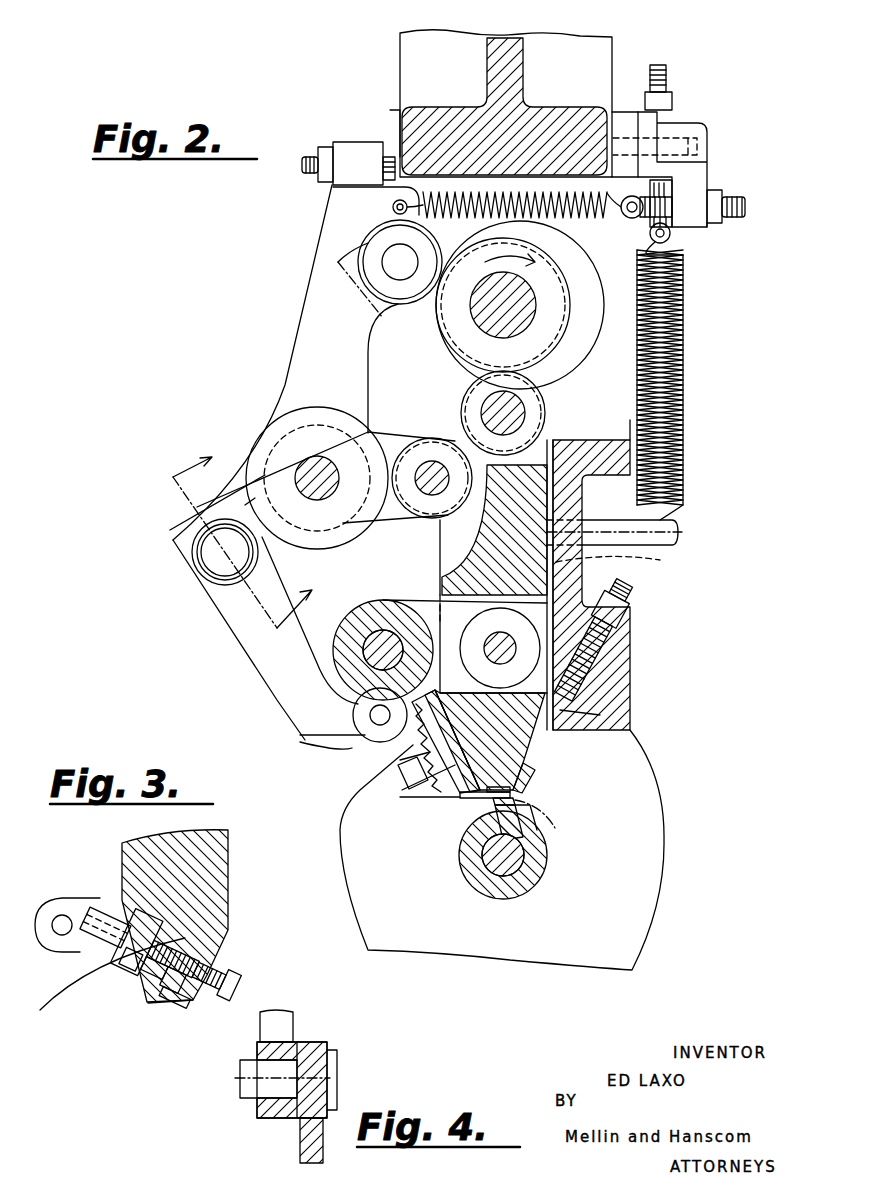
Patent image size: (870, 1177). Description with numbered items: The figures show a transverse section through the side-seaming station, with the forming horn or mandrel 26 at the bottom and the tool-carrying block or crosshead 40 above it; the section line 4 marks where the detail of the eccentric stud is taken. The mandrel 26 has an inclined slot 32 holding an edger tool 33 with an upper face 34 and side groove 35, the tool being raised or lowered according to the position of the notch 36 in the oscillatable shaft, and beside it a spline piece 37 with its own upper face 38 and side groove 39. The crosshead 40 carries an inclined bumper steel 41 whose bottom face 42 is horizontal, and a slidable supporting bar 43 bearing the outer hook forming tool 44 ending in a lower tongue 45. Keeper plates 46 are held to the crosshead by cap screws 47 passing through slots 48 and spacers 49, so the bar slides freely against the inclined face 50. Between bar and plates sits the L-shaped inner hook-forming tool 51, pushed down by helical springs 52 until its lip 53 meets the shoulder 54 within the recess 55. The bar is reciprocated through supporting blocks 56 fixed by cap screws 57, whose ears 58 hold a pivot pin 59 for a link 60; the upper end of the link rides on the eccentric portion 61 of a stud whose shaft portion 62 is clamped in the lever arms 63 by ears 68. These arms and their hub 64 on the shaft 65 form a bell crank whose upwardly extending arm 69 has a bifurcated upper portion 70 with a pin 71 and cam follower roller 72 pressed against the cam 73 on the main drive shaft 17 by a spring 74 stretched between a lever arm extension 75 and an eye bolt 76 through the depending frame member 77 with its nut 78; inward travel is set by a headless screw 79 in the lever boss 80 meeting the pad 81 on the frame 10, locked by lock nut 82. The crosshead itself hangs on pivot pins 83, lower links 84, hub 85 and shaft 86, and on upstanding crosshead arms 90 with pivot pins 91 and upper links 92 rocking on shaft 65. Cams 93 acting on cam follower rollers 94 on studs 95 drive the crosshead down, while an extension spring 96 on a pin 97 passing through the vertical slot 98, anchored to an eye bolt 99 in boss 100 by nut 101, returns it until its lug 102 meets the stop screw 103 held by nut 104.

In FIG. 2, the section line 4— 4 is at (240, 547).
In FIG. 2, the frame 10 is at (548, 50).
In FIG. 2, the main drive shaft 17 is at (500, 303).
In FIG. 2, the mandrel 26 is at (548, 876).
In FIG. 2, the inclined slot 32 is at (534, 837).
In FIG. 2, the edger tool 33 is at (522, 821).
In FIG. 2, the upper face 34 is at (508, 789).
In FIG. 2, the side groove 35 is at (518, 803).
In FIG. 2, the notch 36 is at (495, 848).
In FIG. 2, the spline piece 37 is at (485, 809).
In FIG. 2, the upper face 38 is at (460, 796).
In FIG. 2, the side groove 39 is at (470, 801).
In FIG. 2, the crosshead 40 is at (487, 527).
In FIG. 3, the crosshead 40 is at (212, 862).
In FIG. 2, the bumper steel 41 is at (525, 767).
In FIG. 3, the bumper steel 41 is at (245, 948).
In FIG. 2, the bottom face 42 is at (528, 797).
In FIG. 3, the bottom face 42 is at (214, 969).
In FIG. 2, the slidable supporting bar 43 is at (437, 720).
In FIG. 2, the outer hook forming tool 44 is at (457, 766).
In FIG. 2, the lower tongue 45 is at (490, 782).
In FIG. 2, the keeper plates 46 is at (370, 714).
In FIG. 3, the cap screws 47 is at (106, 993).
In FIG. 3, the slots 48 is at (79, 964).
In FIG. 3, the spacers 49 is at (165, 933).
In FIG. 3, the inclined face 50 is at (151, 885).
In FIG. 2, the inner hook-forming tool 51 is at (440, 796).
In FIG. 3, the inner hook-forming tool 51 is at (162, 1003).
In FIG. 2, the helical springs 52 is at (420, 754).
In FIG. 3, the lip 53 is at (238, 924).
In FIG. 3, the shoulder 54 is at (157, 1011).
In FIG. 3, the recess 55 is at (130, 1005).
In FIG. 2, the supporting blocks 56 is at (445, 777).
In FIG. 3, the supporting blocks 56 is at (135, 972).
In FIG. 2, the cap screws 57 is at (405, 774).
In FIG. 3, the cap screws 57 is at (100, 962).
In FIG. 2, the ears 58 is at (350, 745).
In FIG. 3, the ears 58 is at (58, 906).
In FIG. 2, the pivot pin 59 is at (315, 730).
In FIG. 2, the link 60 is at (272, 658).
In FIG. 4, the link 60 is at (300, 1160).
In FIG. 4, the eccentric portion 61 is at (322, 1068).
In FIG. 4, the shaft portion 62 is at (275, 1092).
In FIG. 2, the lever arms 63 is at (232, 500).
In FIG. 4, the lever arms 63 is at (283, 1023).
In FIG. 2, the hub 64 is at (268, 430).
In FIG. 2, the shaft 65 is at (313, 478).
In FIG. 2, the ears 68 is at (182, 550).
In FIG. 2, the upwardly extending arm 69 is at (300, 318).
In FIG. 2, the bifurcated upper portion 70 is at (340, 264).
In FIG. 2, the pin 71 is at (398, 258).
In FIG. 2, the cam follower roller 72 is at (375, 232).
In FIG. 2, the cam 73 is at (592, 282).
In FIG. 2, the spring 74 is at (590, 226).
In FIG. 2, the lever arm extension 75 is at (338, 189).
In FIG. 2, the eye bolt 76 is at (740, 192).
In FIG. 2, the depending frame member 77 is at (697, 226).
In FIG. 2, the nut 78 is at (720, 227).
In FIG. 2, the headless screw 79 is at (300, 165).
In FIG. 2, the lever boss 80 is at (348, 142).
In FIG. 2, the pad 81 is at (388, 155).
In FIG. 2, the lock nut 82 is at (320, 148).
In FIG. 2, the pivot pins 83 is at (505, 642).
In FIG. 2, the lower links 84 is at (428, 602).
In FIG. 2, the hub 85 is at (357, 612).
In FIG. 2, the shaft 86 is at (382, 650).
In FIG. 2, the crosshead arms 90 is at (535, 447).
In FIG. 2, the pivot pins 91 is at (432, 470).
In FIG. 2, the upper links 92 is at (395, 435).
In FIG. 2, the cams 93 is at (438, 356).
In FIG. 2, the cam follower rollers 94 is at (537, 383).
In FIG. 2, the studs 95 is at (512, 410).
In FIG. 2, the extension spring 96 is at (684, 402).
In FIG. 2, the pin 97 is at (680, 526).
In FIG. 2, the vertical slot 98 is at (619, 562).
In FIG. 2, the eye bolt 99 is at (668, 72).
In FIG. 2, the boss 100 is at (690, 120).
In FIG. 2, the nut 101 is at (685, 107).
In FIG. 2, the lug 102 is at (603, 716).
In FIG. 2, the stop screw 103 is at (625, 603).
In FIG. 2, the nut 104 is at (618, 622).